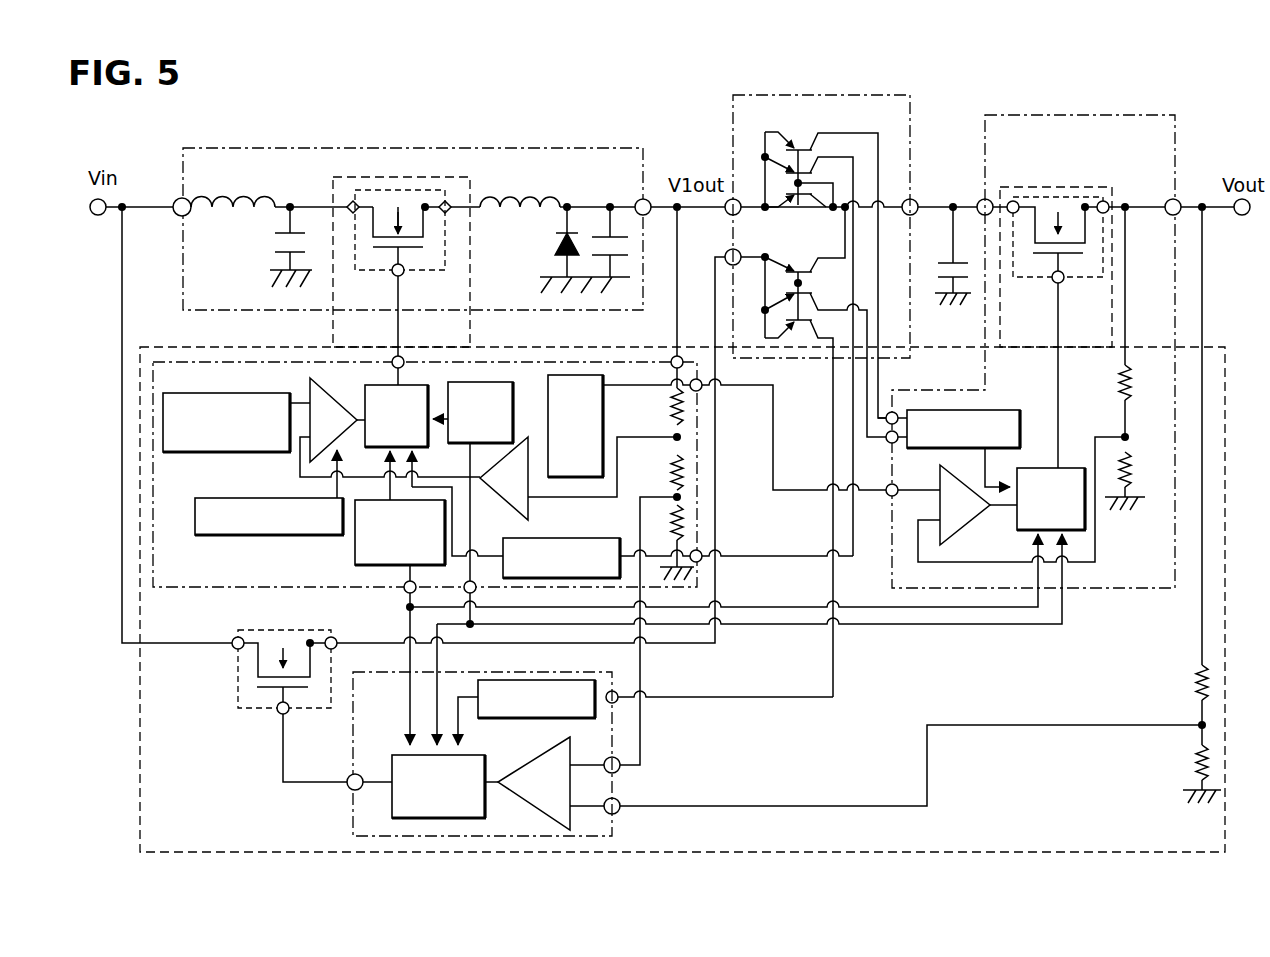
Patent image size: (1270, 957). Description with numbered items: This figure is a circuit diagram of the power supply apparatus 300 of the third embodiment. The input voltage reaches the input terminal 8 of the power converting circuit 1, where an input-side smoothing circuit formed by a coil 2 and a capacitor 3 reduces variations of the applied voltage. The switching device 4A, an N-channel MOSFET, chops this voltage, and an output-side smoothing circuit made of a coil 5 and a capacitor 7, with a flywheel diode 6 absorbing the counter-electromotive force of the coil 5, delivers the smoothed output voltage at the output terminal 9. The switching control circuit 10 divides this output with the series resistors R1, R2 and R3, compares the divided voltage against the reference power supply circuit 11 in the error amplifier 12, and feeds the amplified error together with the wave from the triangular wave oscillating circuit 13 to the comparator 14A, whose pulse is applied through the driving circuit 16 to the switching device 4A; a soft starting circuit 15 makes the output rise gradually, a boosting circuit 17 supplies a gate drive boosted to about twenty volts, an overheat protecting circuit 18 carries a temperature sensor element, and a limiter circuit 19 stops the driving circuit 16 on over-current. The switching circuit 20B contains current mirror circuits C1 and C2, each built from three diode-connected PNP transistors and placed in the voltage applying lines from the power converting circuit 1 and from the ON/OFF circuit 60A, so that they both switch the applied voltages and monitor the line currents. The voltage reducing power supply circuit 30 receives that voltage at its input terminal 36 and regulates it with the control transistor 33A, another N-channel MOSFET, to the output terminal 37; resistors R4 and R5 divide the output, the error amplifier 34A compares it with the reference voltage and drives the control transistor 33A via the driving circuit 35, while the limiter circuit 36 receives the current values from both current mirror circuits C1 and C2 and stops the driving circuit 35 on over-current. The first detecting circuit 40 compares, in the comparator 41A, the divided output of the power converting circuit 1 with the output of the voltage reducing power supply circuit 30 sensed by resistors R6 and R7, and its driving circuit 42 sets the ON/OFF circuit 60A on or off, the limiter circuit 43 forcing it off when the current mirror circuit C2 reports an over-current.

The power supply apparatus 300 is at (326, 113).
The power converting circuit 1 is at (516, 148).
The input terminal 8 is at (180, 198).
The coil 2 is at (228, 214).
The capacitor 3 is at (284, 247).
The switching device 4A is at (408, 272).
The coil 5 is at (505, 212).
The flywheel diode 6 is at (555, 250).
The capacitor 7 is at (607, 235).
The output terminal 9 is at (646, 199).
The switching control circuit 10 is at (222, 346).
The current mirror circuit C1 is at (746, 153).
The current mirror circuit C2 is at (800, 258).
The switching circuit 20B is at (910, 128).
The limiter circuit 36 is at (983, 199).
The voltage reducing power supply circuit 30 is at (1130, 115).
The control transistor 33A is at (1085, 193).
The output terminal 37 is at (1178, 200).
The comparator 14A is at (311, 393).
The driving circuit 16 is at (391, 384).
The boosting circuit 17 is at (460, 382).
The reference power supply circuit 11 is at (546, 420).
The resistor R1 is at (672, 418).
The resistor R2 is at (672, 482).
The resistor R3 is at (670, 532).
The triangular wave oscillating circuit 13 is at (196, 454).
The soft starting circuit 15 is at (248, 498).
The error amplifier 12 is at (492, 498).
The limiter circuit 19 is at (538, 538).
The overheat protecting circuit 18 is at (385, 568).
The error amplifier 34A is at (972, 522).
The driving circuit 35 is at (1073, 468).
The resistor R4 is at (1120, 372).
The resistor R5 is at (1135, 470).
The resistor R6 is at (1200, 672).
The resistor R7 is at (1200, 770).
The ON/OFF circuit 60A is at (240, 710).
The driving circuit 42 is at (392, 762).
The error amplifier 41A is at (520, 775).
The limiter circuit 43 is at (500, 680).
The first detecting circuit 40 is at (350, 818).